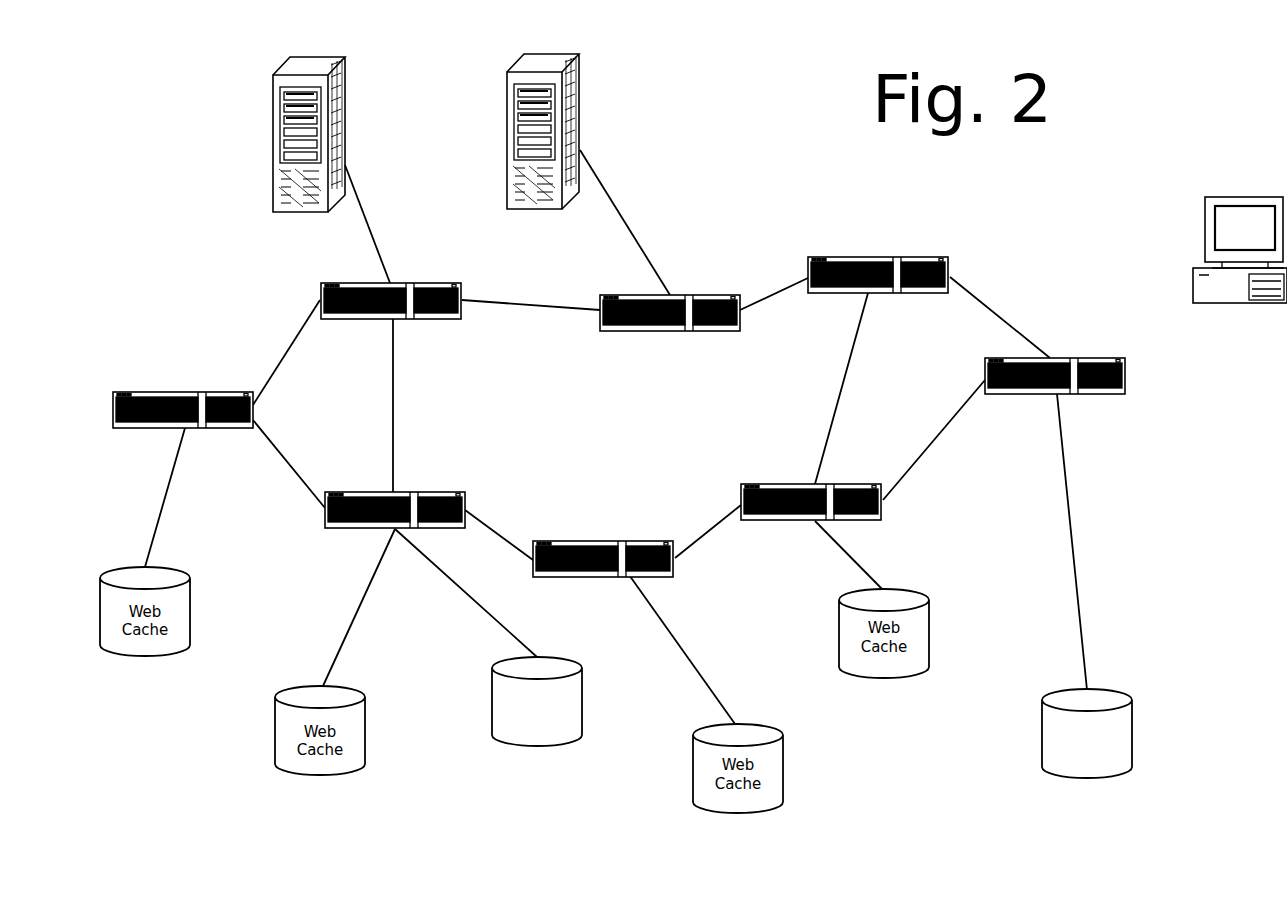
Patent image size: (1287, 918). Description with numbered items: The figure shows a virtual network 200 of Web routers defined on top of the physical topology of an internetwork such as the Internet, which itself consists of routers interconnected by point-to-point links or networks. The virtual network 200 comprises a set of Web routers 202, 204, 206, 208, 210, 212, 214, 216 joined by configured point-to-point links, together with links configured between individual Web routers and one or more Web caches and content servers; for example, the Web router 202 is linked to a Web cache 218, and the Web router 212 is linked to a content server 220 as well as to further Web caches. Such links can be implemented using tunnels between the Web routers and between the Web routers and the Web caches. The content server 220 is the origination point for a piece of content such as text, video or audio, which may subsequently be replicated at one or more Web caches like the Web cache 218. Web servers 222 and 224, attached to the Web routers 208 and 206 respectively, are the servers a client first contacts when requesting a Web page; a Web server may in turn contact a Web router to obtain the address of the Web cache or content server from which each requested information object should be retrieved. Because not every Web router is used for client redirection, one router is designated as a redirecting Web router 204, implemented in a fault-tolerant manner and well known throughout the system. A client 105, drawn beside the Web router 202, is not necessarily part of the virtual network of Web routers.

The virtual network 200 is at (250, 294).
The Web router 202 is at (1085, 385).
The Web router 204 is at (876, 264).
The Web router 206 is at (670, 324).
The Web router 208 is at (393, 312).
The Web router 210 is at (183, 399).
The Web router 212 is at (428, 498).
The Web router 214 is at (603, 548).
The Web router 216 is at (853, 511).
The Web cache 218 is at (1087, 733).
The content server 220 is at (537, 701).
The Web server 222 is at (303, 146).
The Web server 224 is at (535, 142).
The client 105 is at (1240, 261).